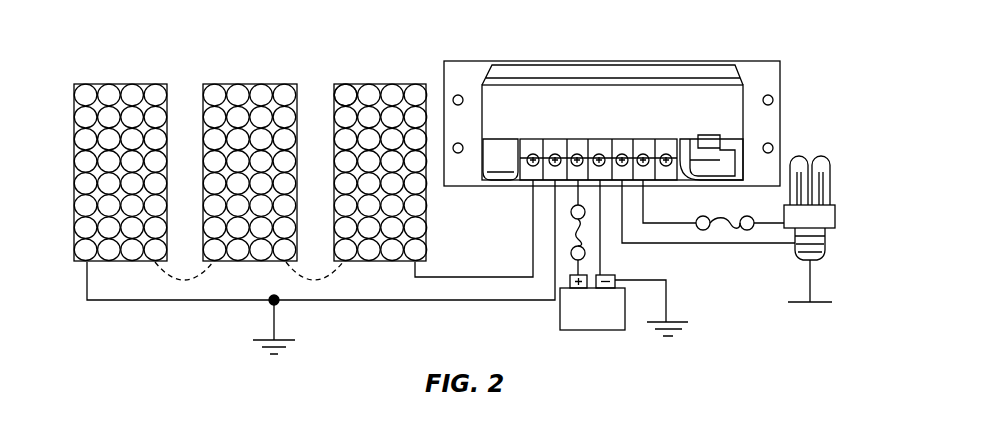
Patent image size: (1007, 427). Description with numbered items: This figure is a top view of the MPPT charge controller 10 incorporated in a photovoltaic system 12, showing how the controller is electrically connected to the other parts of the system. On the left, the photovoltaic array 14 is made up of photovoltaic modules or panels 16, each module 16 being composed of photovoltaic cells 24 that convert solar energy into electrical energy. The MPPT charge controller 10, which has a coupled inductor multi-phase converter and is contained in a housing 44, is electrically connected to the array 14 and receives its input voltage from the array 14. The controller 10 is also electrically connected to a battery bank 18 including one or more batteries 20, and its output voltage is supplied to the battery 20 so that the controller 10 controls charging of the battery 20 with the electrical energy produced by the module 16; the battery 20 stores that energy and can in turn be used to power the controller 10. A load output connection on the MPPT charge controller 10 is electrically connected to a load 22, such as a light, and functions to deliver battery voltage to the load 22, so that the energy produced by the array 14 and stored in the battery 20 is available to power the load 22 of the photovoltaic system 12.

The MPPT charge controller 10 is at (713, 58).
The photovoltaic system 12 is at (365, 23).
The photovoltaic array 14 is at (348, 304).
The photovoltaic module 16 is at (97, 80).
The battery bank 18 is at (588, 333).
The battery 20 is at (613, 320).
The load 22 is at (840, 216).
The photovoltaic cell 24 is at (346, 92).
The housing 44 is at (752, 88).